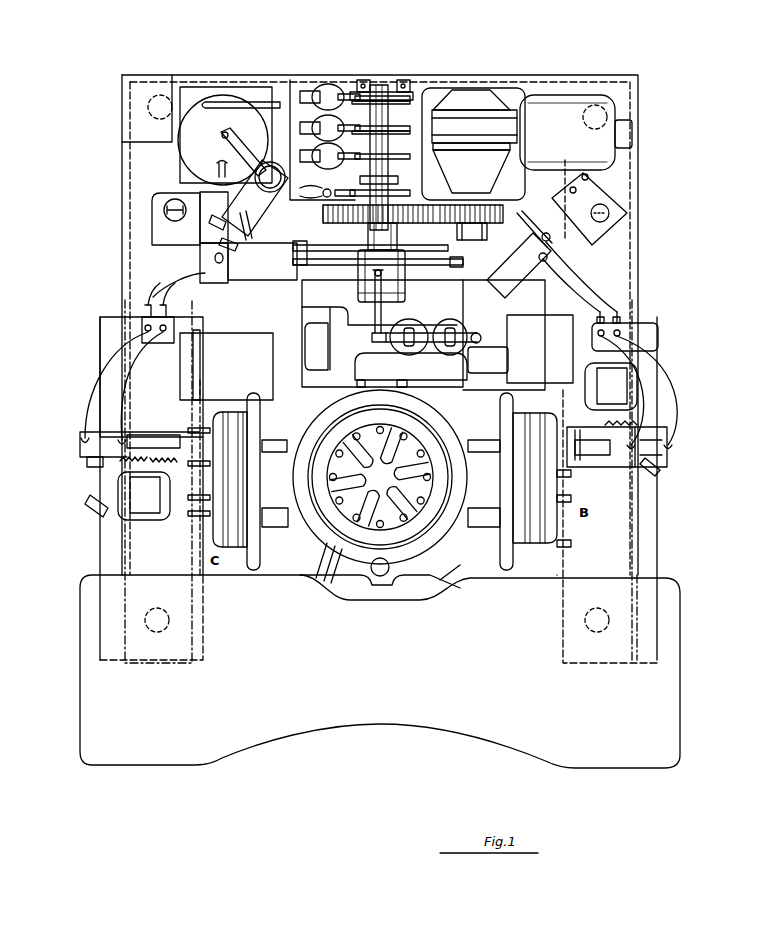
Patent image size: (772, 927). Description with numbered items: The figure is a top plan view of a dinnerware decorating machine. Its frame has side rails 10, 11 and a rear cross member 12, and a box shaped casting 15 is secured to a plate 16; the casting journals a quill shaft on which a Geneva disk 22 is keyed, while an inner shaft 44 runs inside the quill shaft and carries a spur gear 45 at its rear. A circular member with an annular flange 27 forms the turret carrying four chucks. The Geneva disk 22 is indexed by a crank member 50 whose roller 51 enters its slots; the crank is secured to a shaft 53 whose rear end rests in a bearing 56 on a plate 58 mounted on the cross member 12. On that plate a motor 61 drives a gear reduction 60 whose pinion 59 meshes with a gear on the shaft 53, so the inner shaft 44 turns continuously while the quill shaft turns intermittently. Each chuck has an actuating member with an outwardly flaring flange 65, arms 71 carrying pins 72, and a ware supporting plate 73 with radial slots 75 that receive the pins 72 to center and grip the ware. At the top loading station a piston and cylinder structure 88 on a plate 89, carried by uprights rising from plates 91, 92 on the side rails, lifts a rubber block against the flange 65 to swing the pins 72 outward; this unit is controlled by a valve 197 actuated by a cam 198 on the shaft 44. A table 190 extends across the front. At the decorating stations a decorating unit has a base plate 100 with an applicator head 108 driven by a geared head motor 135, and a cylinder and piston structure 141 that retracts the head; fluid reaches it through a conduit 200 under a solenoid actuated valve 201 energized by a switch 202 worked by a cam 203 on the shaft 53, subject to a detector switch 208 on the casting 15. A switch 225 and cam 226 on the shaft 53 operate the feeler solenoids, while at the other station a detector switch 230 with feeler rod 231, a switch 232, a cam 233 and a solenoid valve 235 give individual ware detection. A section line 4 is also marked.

The section line 4 is at (600, 210).
The side rail 10 is at (628, 272).
The side rail 11 is at (214, 244).
The cross member 12 is at (279, 85).
The box shaped casting 15 is at (391, 328).
The plate 16 is at (504, 335).
The Geneva disk 22 is at (463, 262).
The annular flange 27 is at (385, 479).
The shaft 44 is at (398, 240).
The spur gear 45 is at (330, 222).
The crank member 50 is at (320, 250).
The roller 51 is at (292, 262).
The shaft 53 is at (388, 178).
The bearing 56 is at (400, 82).
The plate 58 is at (412, 90).
The pinion 59 is at (490, 226).
The gear reduction 60 is at (468, 95).
The motor 61 is at (576, 132).
The outwardly flaring flange 65 is at (250, 392).
The arm 71 is at (384, 428).
The pin 72 is at (350, 434).
The ware supporting plate 73 is at (370, 480).
The slot 75 is at (380, 477).
The piston and cylinder structure 88 is at (405, 578).
The plate 89 is at (453, 570).
The plate 91 is at (650, 556).
The plate 92 is at (108, 538).
The base plate 100 is at (598, 486).
The applicator head 108 is at (587, 455).
The geared head motor 135 is at (142, 518).
The cylinder and piston structure 141 is at (80, 446).
The table 190 is at (380, 671).
The valve 197 is at (322, 190).
The cam 198 is at (352, 190).
The conduit 200 is at (578, 282).
The solenoid actuated valve 201 is at (530, 258).
The switch 202 is at (318, 95).
The cam 203 is at (380, 92).
The detector switch 208 is at (540, 349).
The switch 225 is at (282, 144).
The cam 226 is at (403, 155).
The detector switch 230 is at (226, 366).
The feeler rod 231 is at (192, 388).
The switch 232 is at (268, 122).
The cam 233 is at (404, 128).
The solenoid valve 235 is at (224, 242).